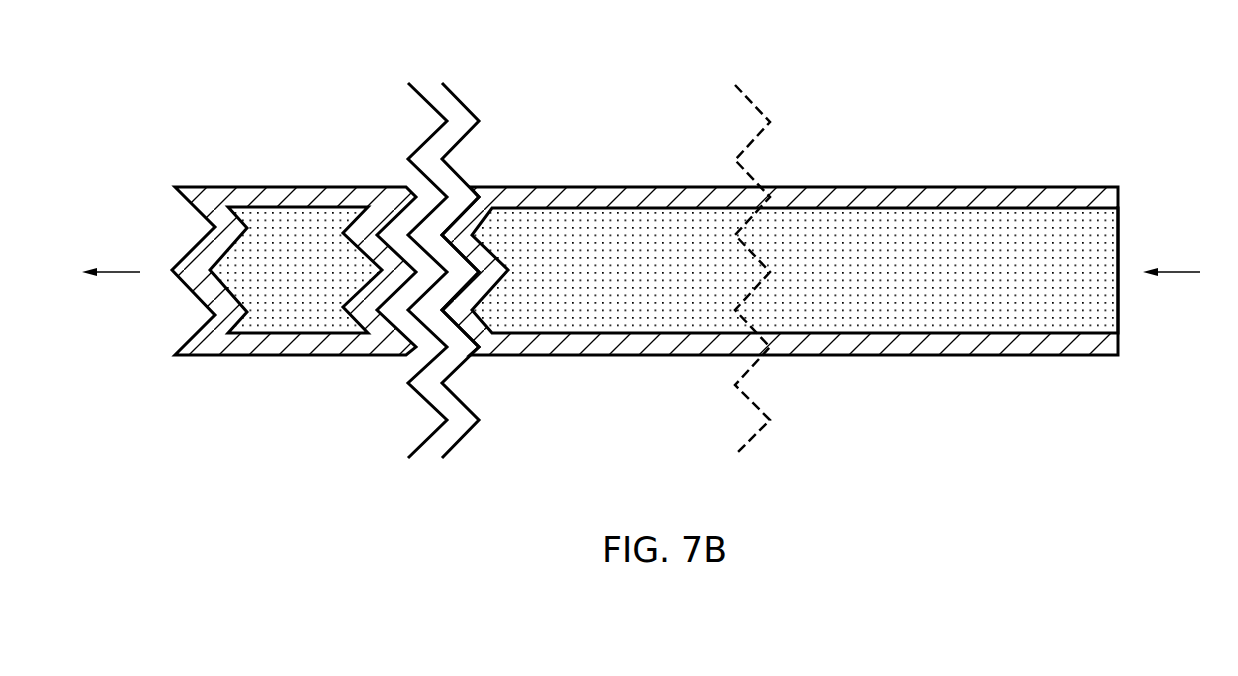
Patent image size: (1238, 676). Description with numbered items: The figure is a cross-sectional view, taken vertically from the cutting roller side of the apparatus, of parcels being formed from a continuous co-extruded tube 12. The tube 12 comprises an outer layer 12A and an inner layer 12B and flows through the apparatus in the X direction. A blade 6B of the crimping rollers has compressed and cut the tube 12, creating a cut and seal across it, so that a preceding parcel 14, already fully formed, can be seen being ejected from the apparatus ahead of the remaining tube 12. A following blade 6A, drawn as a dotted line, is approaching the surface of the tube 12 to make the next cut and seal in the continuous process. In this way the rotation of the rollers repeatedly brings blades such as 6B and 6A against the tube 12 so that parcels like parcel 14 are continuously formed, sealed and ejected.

The preceding parcel 14 is at (265, 187).
The co-extruded tube 12 is at (833, 276).
The outer layer 12A is at (1122, 197).
The inner layer 12B is at (1042, 285).
The following blade 6A is at (735, 87).
The blade 6B is at (430, 87).
The direction X is at (1182, 273).